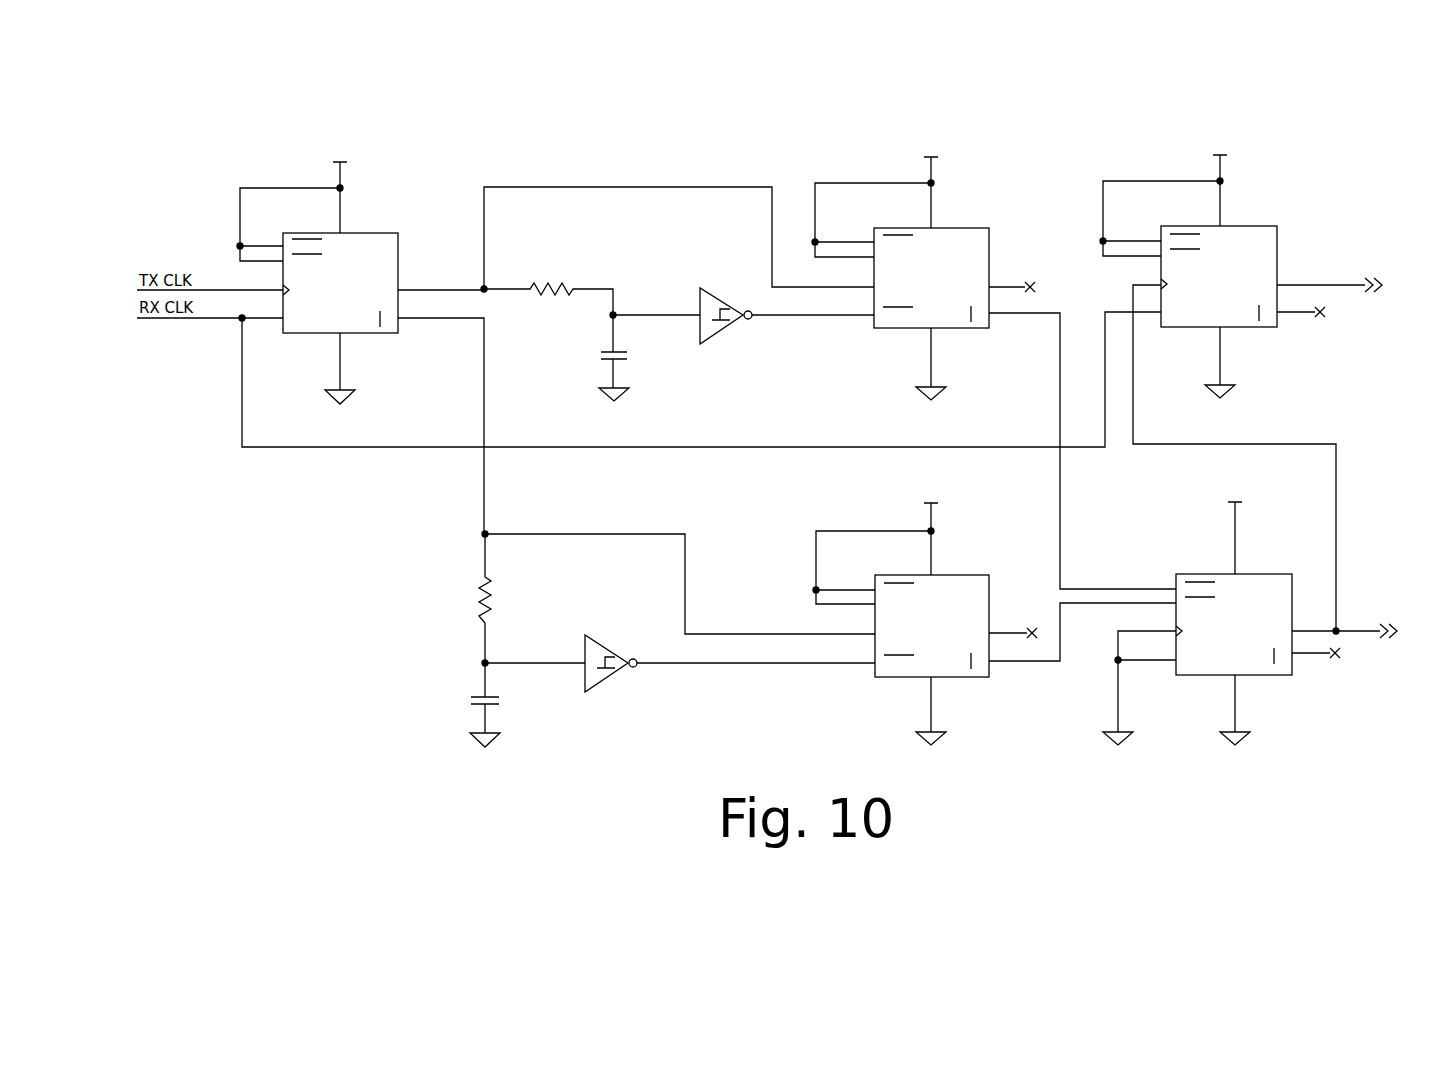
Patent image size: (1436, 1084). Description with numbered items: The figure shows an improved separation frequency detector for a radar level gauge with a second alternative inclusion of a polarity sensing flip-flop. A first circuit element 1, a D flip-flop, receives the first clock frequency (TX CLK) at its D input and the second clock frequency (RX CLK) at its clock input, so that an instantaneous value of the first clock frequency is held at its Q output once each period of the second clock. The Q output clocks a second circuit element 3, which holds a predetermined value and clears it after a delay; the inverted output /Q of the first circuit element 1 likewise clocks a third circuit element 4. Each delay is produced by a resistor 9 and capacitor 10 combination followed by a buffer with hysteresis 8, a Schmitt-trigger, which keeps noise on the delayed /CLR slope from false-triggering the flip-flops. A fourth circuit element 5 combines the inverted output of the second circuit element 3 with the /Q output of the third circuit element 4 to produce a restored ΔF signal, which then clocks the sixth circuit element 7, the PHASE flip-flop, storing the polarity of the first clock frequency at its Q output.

The first circuit element 1 is at (362, 212).
The second circuit element 3 is at (945, 217).
The third circuit element 4 is at (945, 570).
The fourth circuit element 5 is at (1249, 567).
The sixth circuit element 7 is at (1246, 212).
The buffer with hysteresis 8 is at (712, 332).
The resistor 9 is at (561, 290).
The capacitor 10 is at (607, 350).